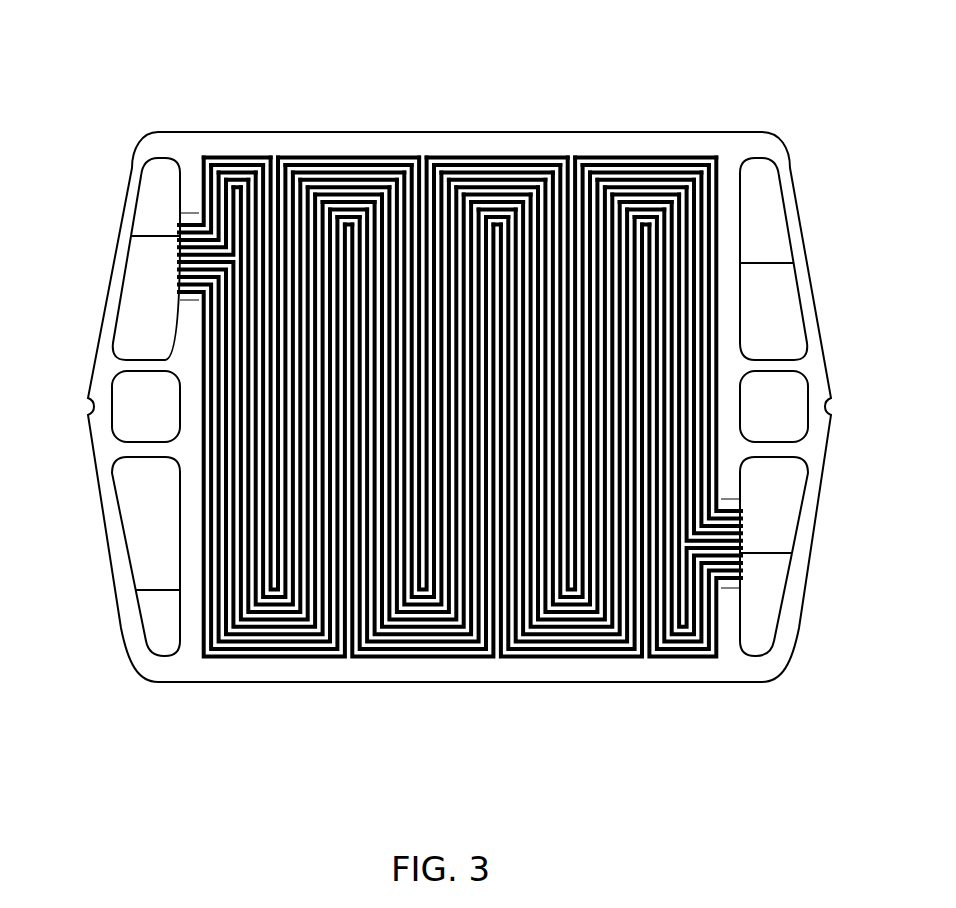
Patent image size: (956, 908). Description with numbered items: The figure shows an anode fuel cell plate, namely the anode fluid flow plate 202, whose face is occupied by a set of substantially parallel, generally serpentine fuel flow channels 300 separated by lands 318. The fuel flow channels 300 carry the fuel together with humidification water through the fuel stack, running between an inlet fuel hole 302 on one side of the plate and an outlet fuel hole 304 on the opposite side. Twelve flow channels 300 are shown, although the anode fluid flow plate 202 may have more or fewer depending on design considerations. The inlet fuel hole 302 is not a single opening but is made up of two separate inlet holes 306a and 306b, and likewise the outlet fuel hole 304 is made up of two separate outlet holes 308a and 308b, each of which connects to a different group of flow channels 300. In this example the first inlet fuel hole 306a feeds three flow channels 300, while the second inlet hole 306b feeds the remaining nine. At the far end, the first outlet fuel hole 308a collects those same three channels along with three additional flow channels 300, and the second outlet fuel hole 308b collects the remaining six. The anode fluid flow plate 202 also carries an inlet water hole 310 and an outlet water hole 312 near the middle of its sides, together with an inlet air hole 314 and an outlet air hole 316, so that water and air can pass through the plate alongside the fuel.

The anode fluid flow plate 202 is at (540, 119).
The fuel flow channels 300 is at (460, 358).
The lands 318 is at (368, 150).
The inlet fuel hole 302 is at (116, 244).
The outlet fuel hole 304 is at (790, 529).
The first inlet fuel hole 306a is at (157, 210).
The second inlet hole 306b is at (123, 293).
The first outlet fuel hole 308a is at (782, 492).
The second outlet fuel hole 308b is at (757, 580).
The inlet water hole 310 is at (103, 412).
The outlet water hole 312 is at (797, 380).
The inlet air hole 314 is at (110, 520).
The outlet air hole 316 is at (780, 222).